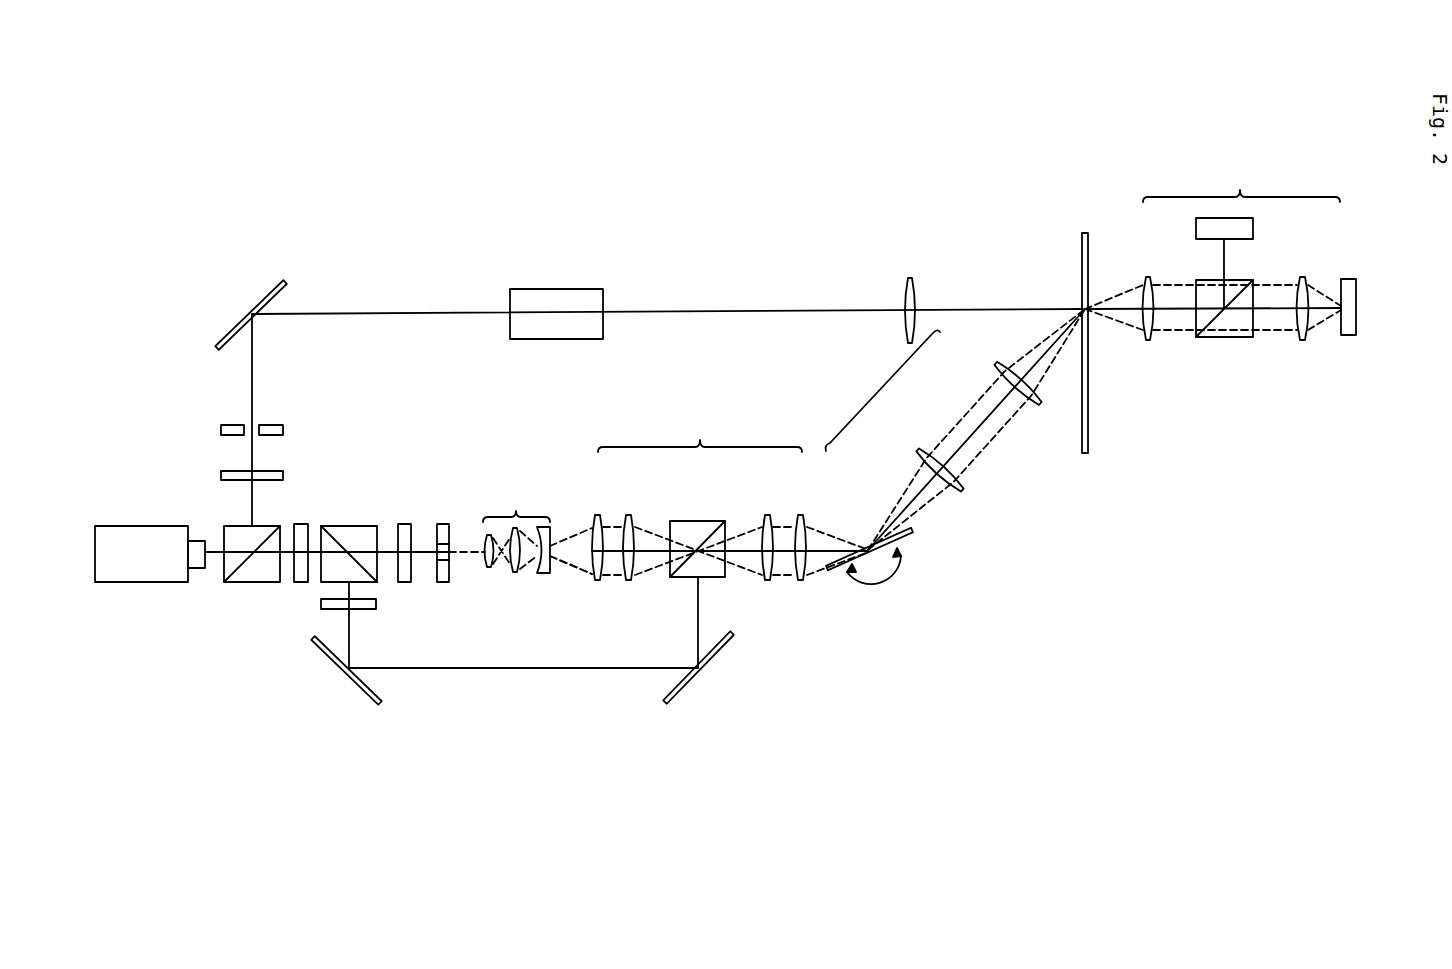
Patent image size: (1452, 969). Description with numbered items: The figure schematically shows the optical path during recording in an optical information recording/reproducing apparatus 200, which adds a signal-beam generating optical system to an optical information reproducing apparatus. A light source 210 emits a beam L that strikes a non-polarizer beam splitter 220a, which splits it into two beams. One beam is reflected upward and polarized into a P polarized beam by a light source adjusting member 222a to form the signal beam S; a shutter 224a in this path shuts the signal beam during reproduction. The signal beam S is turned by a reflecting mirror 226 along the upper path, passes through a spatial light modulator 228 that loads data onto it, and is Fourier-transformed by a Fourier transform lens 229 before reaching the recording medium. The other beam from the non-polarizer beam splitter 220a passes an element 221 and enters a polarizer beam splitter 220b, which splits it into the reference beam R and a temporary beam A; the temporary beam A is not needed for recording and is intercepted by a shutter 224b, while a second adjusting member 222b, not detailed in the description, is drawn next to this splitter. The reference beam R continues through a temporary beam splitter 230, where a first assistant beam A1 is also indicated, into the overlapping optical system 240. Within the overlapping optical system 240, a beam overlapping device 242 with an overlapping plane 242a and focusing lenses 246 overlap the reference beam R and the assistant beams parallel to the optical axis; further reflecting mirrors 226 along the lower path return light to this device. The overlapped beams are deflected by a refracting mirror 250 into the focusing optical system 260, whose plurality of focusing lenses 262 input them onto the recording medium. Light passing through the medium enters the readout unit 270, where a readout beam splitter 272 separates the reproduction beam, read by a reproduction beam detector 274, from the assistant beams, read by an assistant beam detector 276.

The optical information recording/reproducing apparatus 200 is at (356, 192).
The light source 210 is at (133, 526).
The non-polarizer beam splitter 220a is at (247, 583).
The polarizer beam splitter 220b is at (346, 526).
The wave plate 221 is at (301, 524).
The light source adjusting member 222a is at (224, 471).
The shutter 222b is at (403, 524).
The shutter 224a is at (224, 425).
The shutter 224b is at (441, 583).
The reflecting mirrors 226 is at (262, 300).
The spatial light modulator 228 is at (580, 289).
The Fourier transform lens 229 is at (910, 278).
The temporary beam splitter 230 is at (537, 528).
The overlapping optical system 240 is at (700, 432).
The beam splitter 242 is at (684, 521).
The beam splitting surface 242a is at (711, 520).
The lens 246 is at (627, 515).
The refracting mirror 250 is at (912, 537).
The focusing optical system 260 is at (886, 385).
The lens 262 is at (995, 365).
The readout unit 270 is at (1213, 249).
The readout beam splitter 272 is at (1228, 338).
The reproduction beam detector 274 is at (1253, 228).
The assistant beam detector 276 is at (1345, 336).
The beam L is at (212, 555).
The temporary beam A is at (384, 553).
The first assistant beam A1 is at (578, 551).
The reference beam R is at (578, 551).
The signal beam S is at (717, 311).